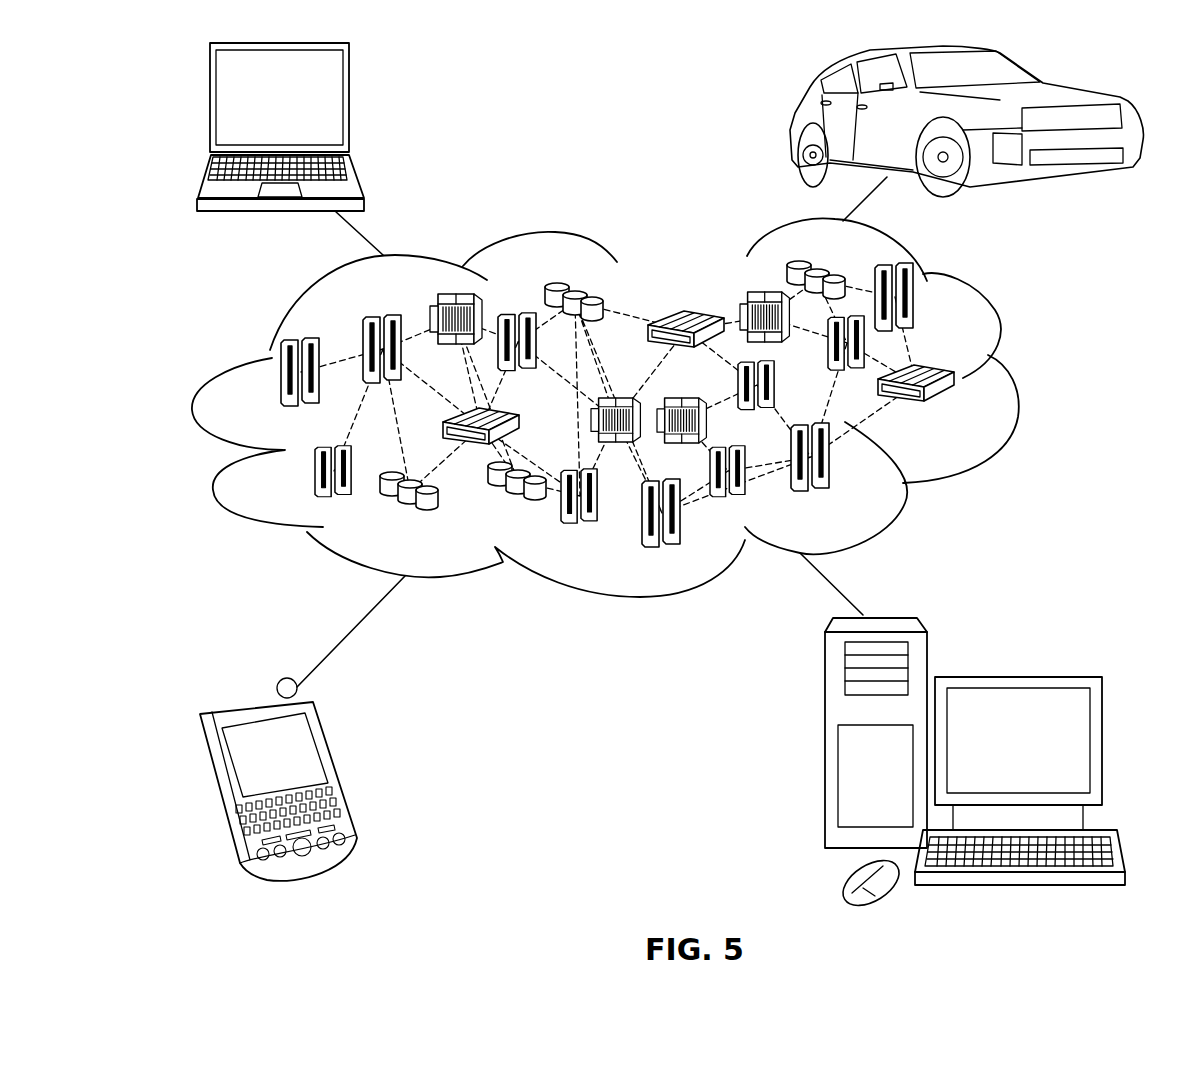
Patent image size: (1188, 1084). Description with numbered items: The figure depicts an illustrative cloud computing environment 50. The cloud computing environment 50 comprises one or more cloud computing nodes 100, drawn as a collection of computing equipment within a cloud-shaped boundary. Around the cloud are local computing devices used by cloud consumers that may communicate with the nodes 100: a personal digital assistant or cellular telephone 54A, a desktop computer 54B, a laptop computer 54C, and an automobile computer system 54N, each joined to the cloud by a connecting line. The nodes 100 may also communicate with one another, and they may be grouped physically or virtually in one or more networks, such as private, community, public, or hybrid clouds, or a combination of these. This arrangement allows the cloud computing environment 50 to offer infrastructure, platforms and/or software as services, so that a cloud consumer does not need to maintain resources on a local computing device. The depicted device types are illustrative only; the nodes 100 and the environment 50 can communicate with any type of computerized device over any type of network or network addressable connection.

The cloud computing environment 50 is at (1020, 382).
The cloud computing nodes 100 is at (960, 416).
The personal digital assistant or cellular telephone 54A is at (340, 770).
The desktop computer 54B is at (1015, 673).
The laptop computer 54C is at (350, 104).
The automobile computer system 54N is at (790, 121).